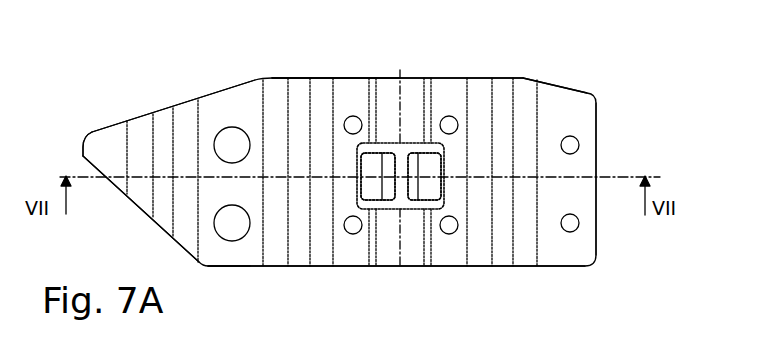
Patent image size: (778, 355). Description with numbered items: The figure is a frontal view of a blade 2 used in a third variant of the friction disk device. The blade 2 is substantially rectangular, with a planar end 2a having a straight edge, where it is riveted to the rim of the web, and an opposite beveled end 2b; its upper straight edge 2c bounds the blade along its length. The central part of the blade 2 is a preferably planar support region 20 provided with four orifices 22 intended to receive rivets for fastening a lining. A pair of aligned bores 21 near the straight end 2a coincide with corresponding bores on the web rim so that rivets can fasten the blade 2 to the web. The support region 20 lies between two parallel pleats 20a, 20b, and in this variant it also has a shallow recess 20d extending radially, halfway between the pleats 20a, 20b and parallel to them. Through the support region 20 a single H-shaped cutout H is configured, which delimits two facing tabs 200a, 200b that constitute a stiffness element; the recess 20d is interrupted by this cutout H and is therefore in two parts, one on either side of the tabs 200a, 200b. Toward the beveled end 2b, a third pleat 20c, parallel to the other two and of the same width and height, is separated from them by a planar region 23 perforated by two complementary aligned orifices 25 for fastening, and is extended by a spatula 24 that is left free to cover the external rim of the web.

The blade 2 is at (527, 276).
The planar end 2a is at (598, 145).
The beveled end 2b is at (167, 232).
The top edge 2c is at (383, 78).
The support region 20 is at (442, 92).
The pleat 20a is at (506, 78).
The pleat 20b is at (288, 78).
The third pleat 20c is at (156, 104).
The shallow recess 20d is at (412, 250).
The aligned bores 21 is at (569, 140).
The orifices 22 is at (357, 228).
The planar region 23 is at (222, 258).
The spatula 24 is at (97, 147).
The aligned orifices 25 is at (228, 138).
The H-shaped cutout H is at (387, 142).
The tab 200a is at (427, 170).
The tab 200b is at (376, 173).